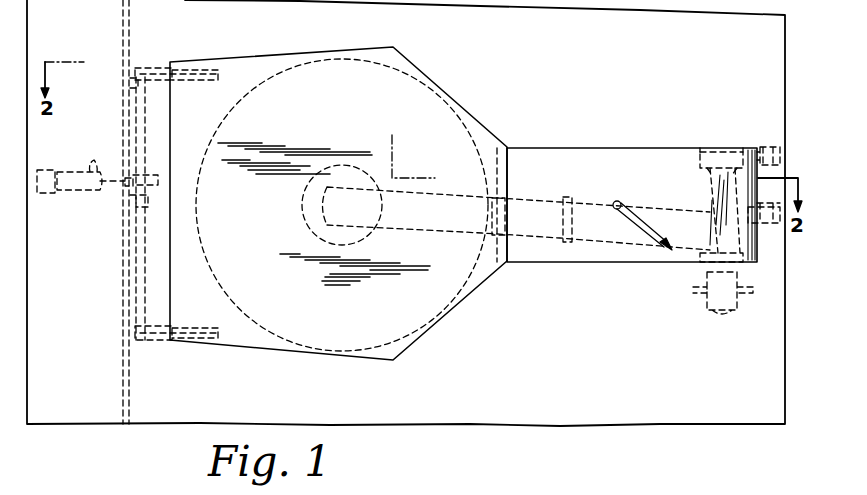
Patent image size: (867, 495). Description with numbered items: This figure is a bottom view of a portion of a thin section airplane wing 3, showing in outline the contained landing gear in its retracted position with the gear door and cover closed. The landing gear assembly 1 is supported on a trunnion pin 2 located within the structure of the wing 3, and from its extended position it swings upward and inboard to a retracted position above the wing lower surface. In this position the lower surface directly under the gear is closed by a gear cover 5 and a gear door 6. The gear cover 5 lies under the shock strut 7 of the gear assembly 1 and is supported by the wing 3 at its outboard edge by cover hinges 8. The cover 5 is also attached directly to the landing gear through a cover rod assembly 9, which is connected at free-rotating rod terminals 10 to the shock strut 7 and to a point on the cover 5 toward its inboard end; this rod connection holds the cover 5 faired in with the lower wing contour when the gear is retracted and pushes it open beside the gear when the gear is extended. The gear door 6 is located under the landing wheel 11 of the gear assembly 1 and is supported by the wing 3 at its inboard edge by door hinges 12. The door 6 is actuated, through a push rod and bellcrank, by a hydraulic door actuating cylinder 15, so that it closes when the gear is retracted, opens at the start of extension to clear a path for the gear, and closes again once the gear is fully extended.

The landing gear assembly 1 is at (576, 246).
The trunnion pin 2 is at (718, 313).
The airplane wing 3 is at (406, 213).
The gear cover 5 is at (612, 155).
The gear door 6 is at (478, 132).
The shock strut 7 is at (595, 219).
The cover hinges 8 is at (777, 203).
The cover rod assembly 9 is at (645, 190).
The rod terminals 10 is at (667, 245).
The landing wheel 11 is at (441, 80).
The door hinges 12 is at (182, 80).
The hydraulic door actuating cylinder 15 is at (78, 173).